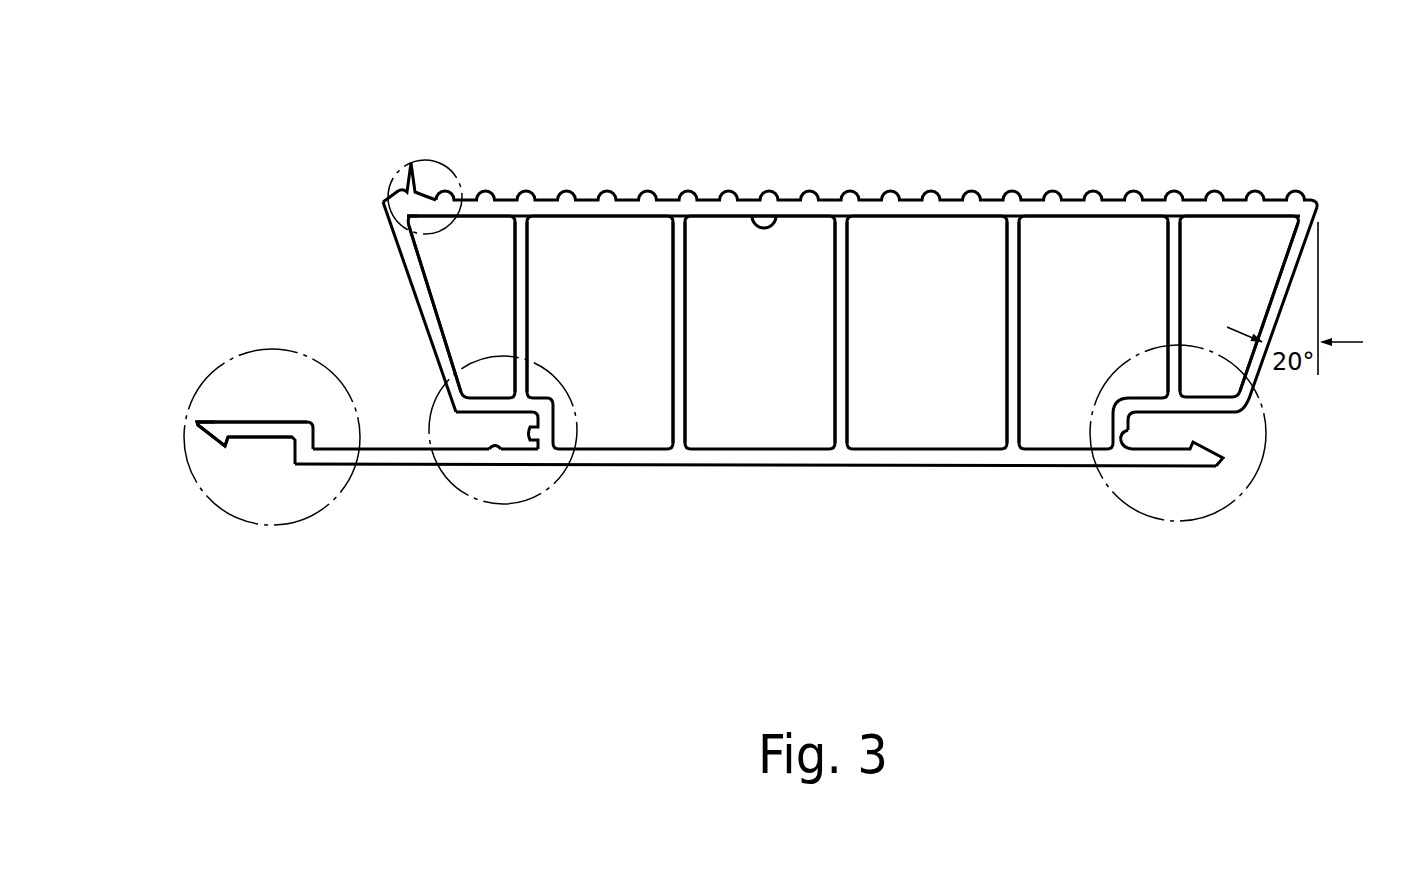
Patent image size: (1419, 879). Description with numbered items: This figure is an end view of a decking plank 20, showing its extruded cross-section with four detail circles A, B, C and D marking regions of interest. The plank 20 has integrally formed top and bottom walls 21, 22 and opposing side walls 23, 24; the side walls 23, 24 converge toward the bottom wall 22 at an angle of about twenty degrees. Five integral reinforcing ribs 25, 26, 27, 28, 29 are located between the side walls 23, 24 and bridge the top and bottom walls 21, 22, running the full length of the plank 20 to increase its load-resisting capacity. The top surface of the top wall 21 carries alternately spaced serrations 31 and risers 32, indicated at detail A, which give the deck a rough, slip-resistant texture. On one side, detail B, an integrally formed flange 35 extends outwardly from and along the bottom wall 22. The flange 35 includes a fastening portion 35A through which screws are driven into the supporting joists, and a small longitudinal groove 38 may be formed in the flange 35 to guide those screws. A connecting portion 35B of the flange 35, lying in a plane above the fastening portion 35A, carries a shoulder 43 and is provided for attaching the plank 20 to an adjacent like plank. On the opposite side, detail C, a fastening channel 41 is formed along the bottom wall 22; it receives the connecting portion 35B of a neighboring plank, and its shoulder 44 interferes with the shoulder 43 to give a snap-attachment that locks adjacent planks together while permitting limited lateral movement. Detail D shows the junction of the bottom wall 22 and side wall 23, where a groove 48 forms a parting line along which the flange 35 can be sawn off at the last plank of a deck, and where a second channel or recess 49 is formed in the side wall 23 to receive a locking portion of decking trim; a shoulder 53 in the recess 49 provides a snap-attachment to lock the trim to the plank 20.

The decking plank 20 is at (761, 292).
The top wall 21 is at (770, 215).
The bottom wall 22 is at (899, 466).
The side wall 23 is at (425, 318).
The side wall 24 is at (1293, 255).
The reinforcing rib 25 is at (523, 255).
The reinforcing rib 26 is at (678, 260).
The reinforcing rib 27 is at (843, 258).
The reinforcing rib 28 is at (1011, 255).
The reinforcing rib 29 is at (1170, 243).
The serration 31 is at (410, 232).
The riser 32 is at (413, 165).
The flange 35 is at (239, 438).
The fastening portion 35A is at (322, 450).
The connecting portion 35B is at (248, 425).
The groove 38 is at (345, 452).
The fastening channel 41 is at (1126, 442).
The shoulder 43 is at (214, 432).
The shoulder 44 is at (1207, 457).
The groove 48 is at (467, 458).
The recess 49 is at (535, 430).
The shoulder 53 is at (493, 453).
The detail A is at (448, 172).
The detail B is at (322, 512).
The detail C is at (1215, 512).
The detail D is at (545, 492).